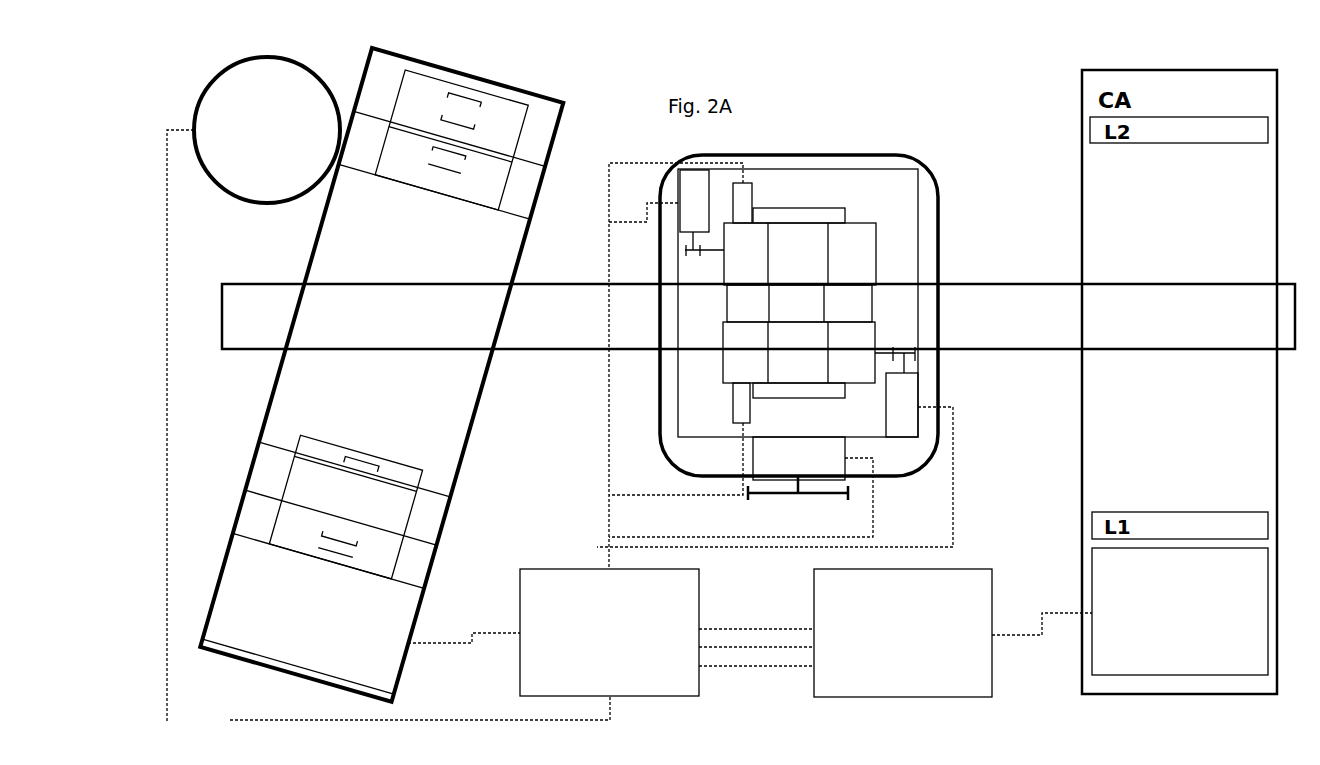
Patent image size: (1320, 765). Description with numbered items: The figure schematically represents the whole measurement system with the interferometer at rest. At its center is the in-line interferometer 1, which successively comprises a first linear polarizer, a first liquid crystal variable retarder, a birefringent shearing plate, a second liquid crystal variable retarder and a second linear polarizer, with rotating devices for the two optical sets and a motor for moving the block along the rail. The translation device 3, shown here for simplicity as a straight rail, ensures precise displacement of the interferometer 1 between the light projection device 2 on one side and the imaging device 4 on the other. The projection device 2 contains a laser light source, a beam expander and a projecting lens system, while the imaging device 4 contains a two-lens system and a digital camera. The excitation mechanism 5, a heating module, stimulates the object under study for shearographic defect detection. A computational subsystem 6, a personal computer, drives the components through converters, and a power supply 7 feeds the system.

The interferometer 1 is at (787, 158).
The light projection device 2 is at (310, 685).
The translation device 3 is at (1016, 303).
The imaging device 4 is at (1205, 606).
The excitation mechanism 5 is at (218, 105).
The computational subsystem 6 is at (950, 597).
The power supply 7 is at (612, 605).